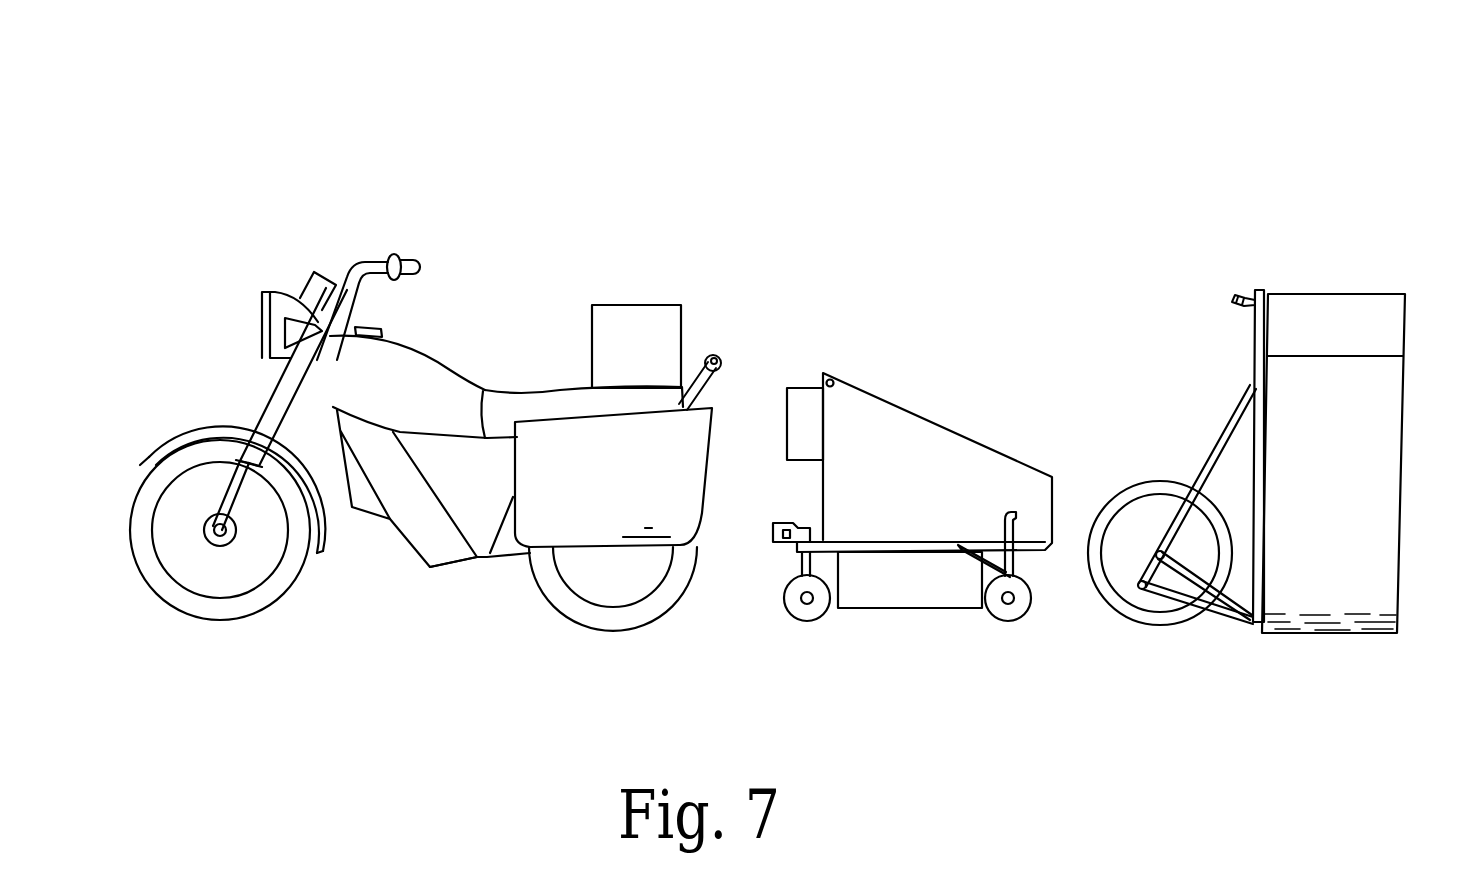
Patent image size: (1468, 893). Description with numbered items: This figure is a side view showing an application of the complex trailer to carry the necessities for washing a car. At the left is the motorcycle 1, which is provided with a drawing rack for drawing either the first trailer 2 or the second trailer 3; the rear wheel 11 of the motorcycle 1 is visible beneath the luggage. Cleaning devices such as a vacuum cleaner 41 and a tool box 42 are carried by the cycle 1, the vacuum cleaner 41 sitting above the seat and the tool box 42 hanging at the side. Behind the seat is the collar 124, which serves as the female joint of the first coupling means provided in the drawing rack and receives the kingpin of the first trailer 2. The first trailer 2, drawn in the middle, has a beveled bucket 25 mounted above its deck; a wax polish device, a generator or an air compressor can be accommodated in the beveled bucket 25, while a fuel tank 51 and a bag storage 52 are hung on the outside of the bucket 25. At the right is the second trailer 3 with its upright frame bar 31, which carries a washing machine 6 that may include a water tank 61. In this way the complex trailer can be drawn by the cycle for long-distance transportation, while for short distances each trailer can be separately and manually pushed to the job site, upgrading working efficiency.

The motorcycle 1 is at (503, 270).
The rear wheel 11 is at (570, 593).
The vacuum cleaner 41 is at (638, 315).
The tool box 42 is at (670, 502).
The collar 124 is at (720, 356).
The first trailer 2 is at (943, 297).
The beveled bucket 25 is at (877, 423).
The fuel tank 51 is at (803, 402).
The bag storage 52 is at (922, 593).
The second trailer 3 is at (1242, 273).
The cart frame bar 31 is at (1262, 290).
The washing machine 6 is at (1335, 293).
The water tank 61 is at (1373, 377).